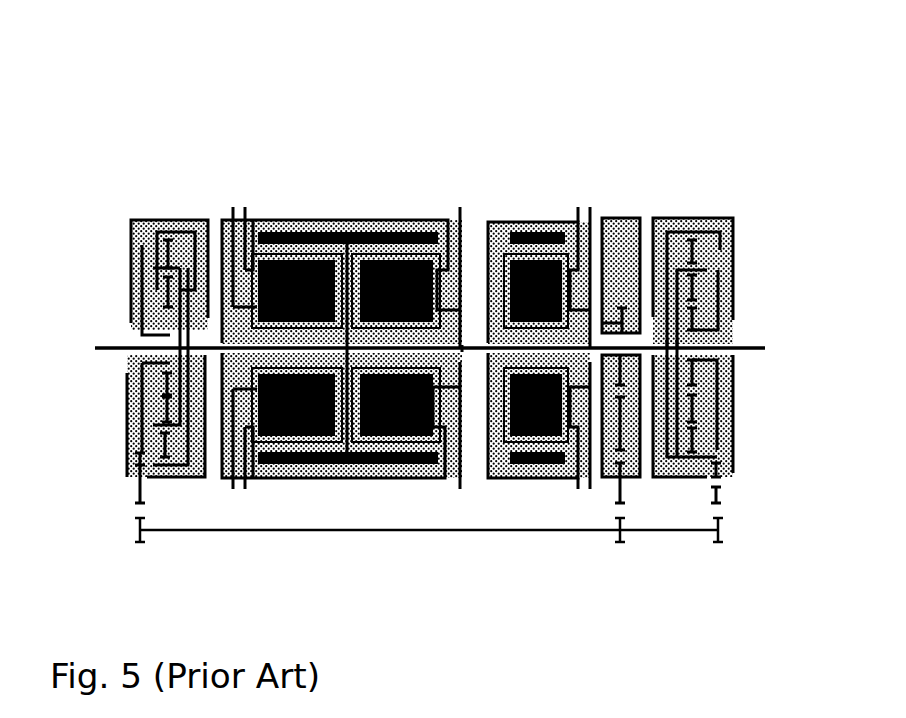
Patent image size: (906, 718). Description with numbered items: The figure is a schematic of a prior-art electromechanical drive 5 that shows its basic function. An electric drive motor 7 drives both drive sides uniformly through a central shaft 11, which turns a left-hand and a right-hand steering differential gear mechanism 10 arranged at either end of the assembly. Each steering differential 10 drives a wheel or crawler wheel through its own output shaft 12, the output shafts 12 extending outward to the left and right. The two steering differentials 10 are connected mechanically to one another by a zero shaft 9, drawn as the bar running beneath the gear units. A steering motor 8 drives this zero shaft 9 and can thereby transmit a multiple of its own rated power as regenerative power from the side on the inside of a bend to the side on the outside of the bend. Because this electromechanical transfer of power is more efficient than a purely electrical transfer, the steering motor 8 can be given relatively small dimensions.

The electromechanical drive 5 is at (490, 124).
The electric drive motor 7 is at (338, 213).
The steering motor 8 is at (540, 218).
The zero shaft 9 is at (310, 531).
The steering differential gear mechanism 10 is at (166, 215).
The central shaft 11 is at (442, 353).
The output shaft 12 is at (100, 343).